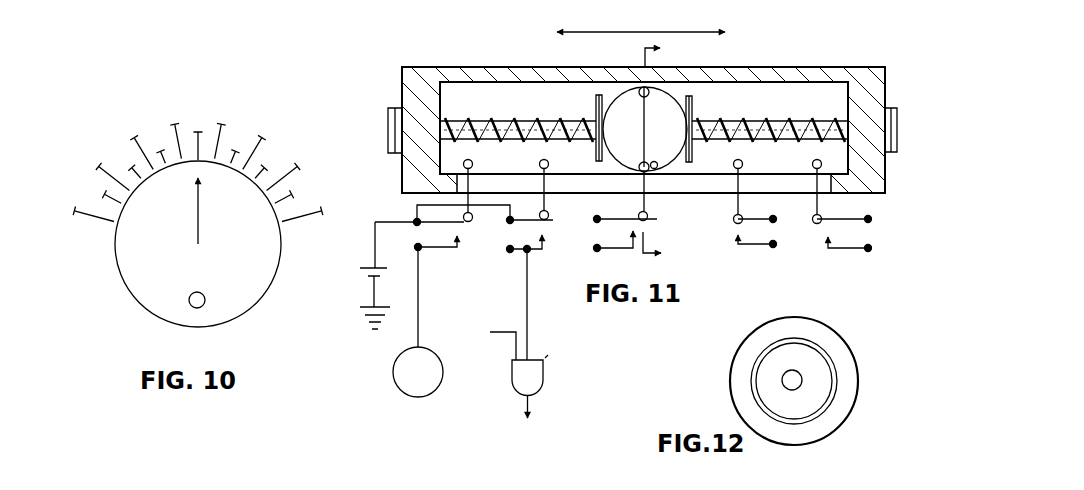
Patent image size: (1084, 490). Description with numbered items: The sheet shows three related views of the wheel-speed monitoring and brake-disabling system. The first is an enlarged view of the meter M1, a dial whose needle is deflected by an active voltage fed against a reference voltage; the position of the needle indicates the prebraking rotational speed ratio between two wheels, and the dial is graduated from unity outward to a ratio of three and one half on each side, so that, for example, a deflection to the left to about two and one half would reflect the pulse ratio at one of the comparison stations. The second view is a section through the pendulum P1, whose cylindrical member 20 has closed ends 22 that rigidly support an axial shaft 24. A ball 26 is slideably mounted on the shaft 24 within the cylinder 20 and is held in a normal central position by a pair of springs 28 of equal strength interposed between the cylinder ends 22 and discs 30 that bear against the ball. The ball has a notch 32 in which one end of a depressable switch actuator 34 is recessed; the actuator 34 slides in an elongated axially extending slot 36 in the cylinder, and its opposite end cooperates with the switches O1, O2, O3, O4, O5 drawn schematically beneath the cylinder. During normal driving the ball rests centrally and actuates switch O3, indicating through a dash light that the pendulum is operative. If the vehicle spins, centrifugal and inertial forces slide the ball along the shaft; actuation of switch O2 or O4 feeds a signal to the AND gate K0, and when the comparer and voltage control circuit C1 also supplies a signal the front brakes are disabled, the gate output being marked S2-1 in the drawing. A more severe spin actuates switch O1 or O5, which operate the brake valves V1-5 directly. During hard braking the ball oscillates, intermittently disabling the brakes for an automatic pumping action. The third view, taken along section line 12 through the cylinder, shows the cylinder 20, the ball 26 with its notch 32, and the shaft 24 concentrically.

In FIG. 10, the meter M1 is at (101, 256).
In FIG. 11, the cylindrical member 20 is at (828, 67).
In FIG. 12, the cylindrical member 20 is at (741, 387).
In FIG. 11, the closed ends 22 is at (402, 93).
In FIG. 11, the axial shaft 24 is at (503, 127).
In FIG. 12, the axial shaft 24 is at (800, 372).
In FIG. 11, the ball 26 is at (667, 103).
In FIG. 12, the ball 26 is at (807, 353).
In FIG. 11, the springs 28 is at (483, 120).
In FIG. 11, the discs 30 is at (594, 100).
In FIG. 11, the notch 32 is at (657, 170).
In FIG. 12, the notch 32 is at (788, 340).
In FIG. 11, the switch actuator 34 is at (640, 186).
In FIG. 11, the slot 36 is at (503, 184).
In FIG. 11, the section line 12 is at (641, 149).
In FIG. 11, the pendulum P1 is at (422, 53).
In FIG. 11, the switch O1 is at (437, 267).
In FIG. 11, the switch O2 is at (537, 238).
In FIG. 11, the switch O3 is at (631, 234).
In FIG. 11, the switch O4 is at (740, 232).
In FIG. 11, the switch O5 is at (834, 235).
In FIG. 11, the brake valves V1-5 is at (418, 322).
In FIG. 11, the comparer and voltage control circuit C1 is at (488, 340).
In FIG. 11, the AND gate K0 is at (530, 375).
In FIG. 11, the output signal S2-1 is at (531, 422).